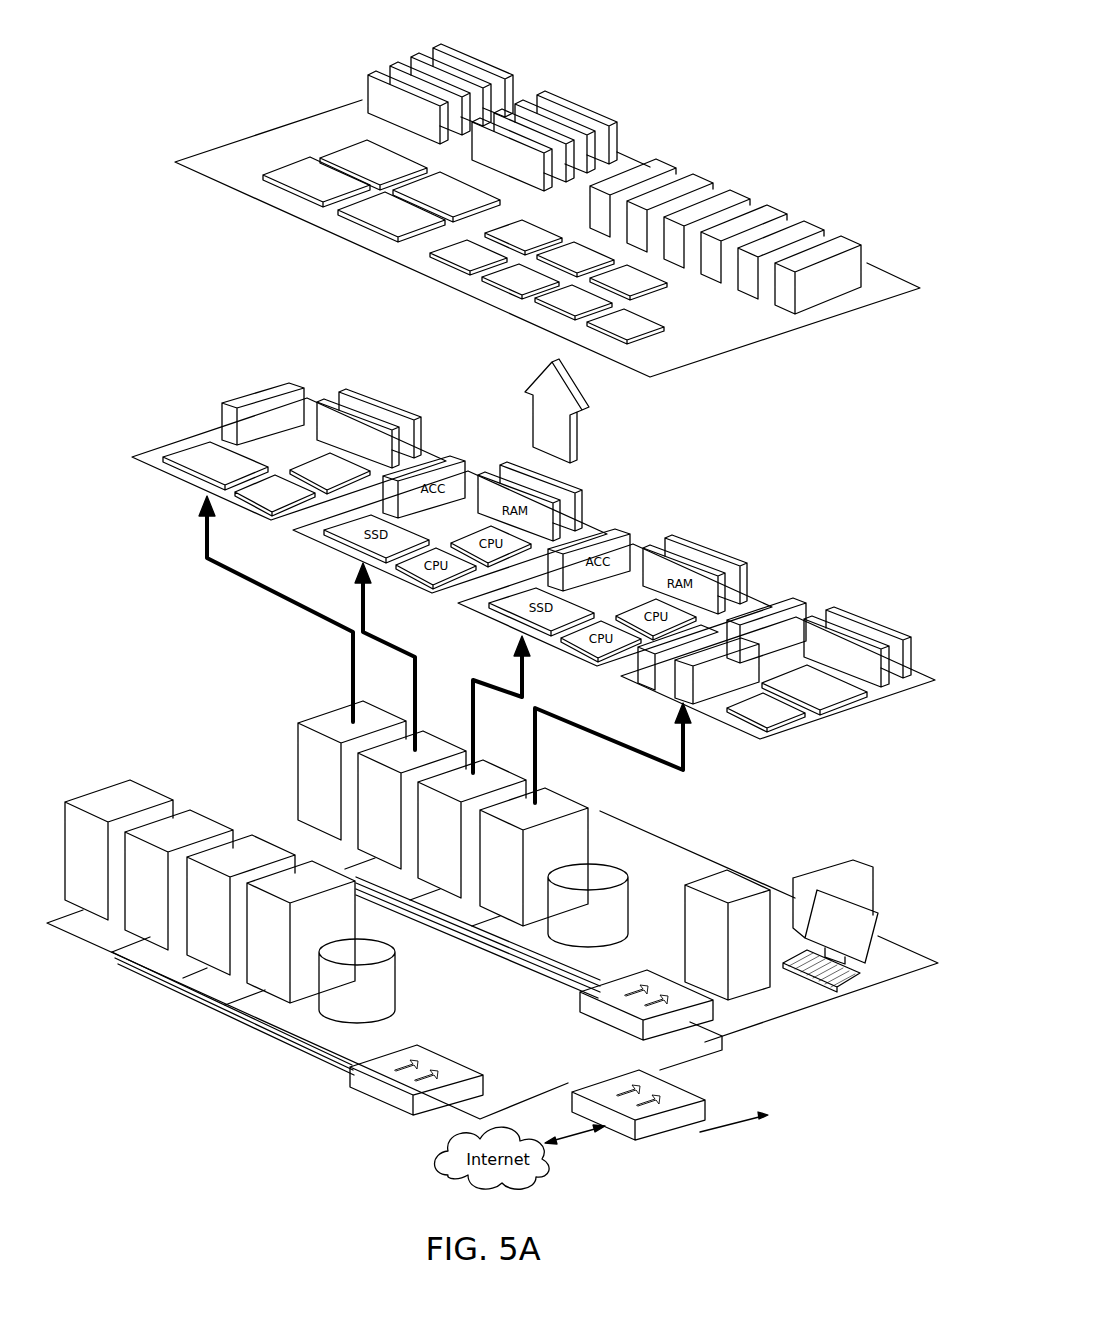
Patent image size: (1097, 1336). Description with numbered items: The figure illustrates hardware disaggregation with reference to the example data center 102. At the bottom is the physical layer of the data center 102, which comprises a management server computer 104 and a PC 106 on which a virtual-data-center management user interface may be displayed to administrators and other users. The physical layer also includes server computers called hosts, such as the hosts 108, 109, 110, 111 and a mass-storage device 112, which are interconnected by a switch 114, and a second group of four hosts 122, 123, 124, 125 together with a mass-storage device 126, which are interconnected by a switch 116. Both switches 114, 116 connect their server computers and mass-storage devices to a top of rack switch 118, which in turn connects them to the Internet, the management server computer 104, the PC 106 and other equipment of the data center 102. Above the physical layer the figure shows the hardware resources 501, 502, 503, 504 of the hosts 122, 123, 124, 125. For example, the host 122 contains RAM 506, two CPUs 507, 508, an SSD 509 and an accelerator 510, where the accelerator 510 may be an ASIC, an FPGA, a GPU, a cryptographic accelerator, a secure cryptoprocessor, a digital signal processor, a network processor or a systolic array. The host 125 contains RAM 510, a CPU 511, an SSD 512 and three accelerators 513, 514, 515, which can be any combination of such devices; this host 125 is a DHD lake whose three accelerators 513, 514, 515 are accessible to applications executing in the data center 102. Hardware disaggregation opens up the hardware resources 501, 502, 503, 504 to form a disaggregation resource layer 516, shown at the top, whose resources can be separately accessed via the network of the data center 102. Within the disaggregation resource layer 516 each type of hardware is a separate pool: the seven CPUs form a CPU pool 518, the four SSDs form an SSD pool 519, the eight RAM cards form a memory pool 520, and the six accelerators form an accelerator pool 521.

The data center 102 is at (278, 1082).
The management server computer 104 is at (717, 880).
The PC 106 is at (837, 870).
The host 108 is at (140, 785).
The host 109 is at (198, 813).
The host 110 is at (260, 843).
The host 111 is at (365, 916).
The mass-storage device 112 is at (397, 990).
The switch 114 is at (453, 1058).
The switch 116 is at (580, 1000).
The top of rack switch 118 is at (705, 1097).
The host 122 is at (370, 703).
The host 123 is at (437, 733).
The host 124 is at (502, 762).
The host 125 is at (565, 792).
The mass-storage device 126 is at (602, 870).
The hardware resources 501 is at (417, 408).
The hardware resources 502 is at (600, 478).
The hardware resources 503 is at (733, 543).
The hardware resources 504 is at (878, 610).
The RAM 506 is at (372, 410).
The CPU 507 is at (262, 507).
The CPU 508 is at (325, 488).
The SSD 509 is at (183, 470).
The accelerator 510 is at (262, 397).
The CPU 511 is at (773, 730).
The SSD 512 is at (840, 706).
The accelerator 513 is at (789, 600).
The accelerator 514 is at (648, 668).
The accelerator 515 is at (681, 688).
The disaggregation resource layer 516 is at (762, 70).
The CPU pool 518 is at (487, 290).
The SSD pool 519 is at (308, 149).
The memory pool 520 is at (537, 88).
The accelerator pool 521 is at (778, 211).